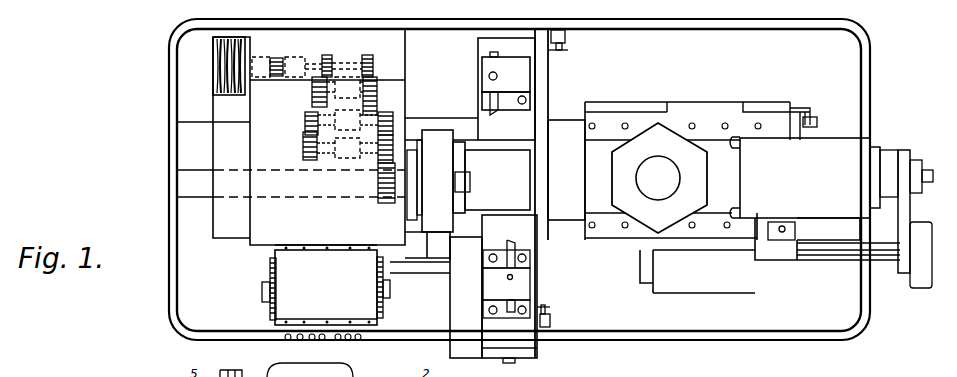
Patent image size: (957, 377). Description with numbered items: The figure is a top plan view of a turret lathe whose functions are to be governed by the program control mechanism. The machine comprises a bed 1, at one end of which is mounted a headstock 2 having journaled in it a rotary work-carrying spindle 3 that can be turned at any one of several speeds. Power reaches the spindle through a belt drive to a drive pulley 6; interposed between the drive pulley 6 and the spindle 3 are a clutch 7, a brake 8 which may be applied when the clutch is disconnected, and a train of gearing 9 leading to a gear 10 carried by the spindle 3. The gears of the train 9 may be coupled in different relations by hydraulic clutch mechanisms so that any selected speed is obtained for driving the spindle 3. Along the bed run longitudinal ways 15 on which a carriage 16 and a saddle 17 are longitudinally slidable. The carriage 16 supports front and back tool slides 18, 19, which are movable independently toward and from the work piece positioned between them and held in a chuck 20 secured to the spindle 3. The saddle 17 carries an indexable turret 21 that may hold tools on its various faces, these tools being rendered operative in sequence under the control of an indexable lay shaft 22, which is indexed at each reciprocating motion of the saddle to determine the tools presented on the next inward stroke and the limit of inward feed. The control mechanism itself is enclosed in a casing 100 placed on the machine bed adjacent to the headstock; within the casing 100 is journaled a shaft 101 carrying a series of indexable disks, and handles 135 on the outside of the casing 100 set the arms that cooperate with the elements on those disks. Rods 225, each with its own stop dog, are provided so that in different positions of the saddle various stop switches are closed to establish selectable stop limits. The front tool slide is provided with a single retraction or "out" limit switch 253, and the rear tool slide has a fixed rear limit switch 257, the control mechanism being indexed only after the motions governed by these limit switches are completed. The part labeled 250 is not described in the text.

The bed 1 is at (712, 339).
The headstock 2 is at (228, 240).
The rotary work-carrying spindle 3 is at (194, 166).
The drive pulley 6 is at (212, 64).
The clutch 7 is at (270, 80).
The brake 8 is at (304, 80).
The train of gearing 9 is at (382, 71).
The gear 10 is at (378, 205).
The longitudinal ways 15 is at (568, 120).
The carriage 16 is at (538, 210).
The saddle 17 is at (834, 137).
The front tool slide 18 is at (531, 304).
The back tool slide 19 is at (531, 89).
The chuck 20 is at (438, 145).
The indexable turret 21 is at (676, 140).
The indexable lay shaft 22 is at (848, 263).
The casing 100 is at (298, 296).
The shaft 101 is at (262, 289).
The handle 135 is at (350, 339).
The rods 225 is at (426, 272).
The stop 250 is at (803, 106).
The retraction or "out" limit switch 253 is at (552, 323).
The rear limit switch 257 is at (566, 46).